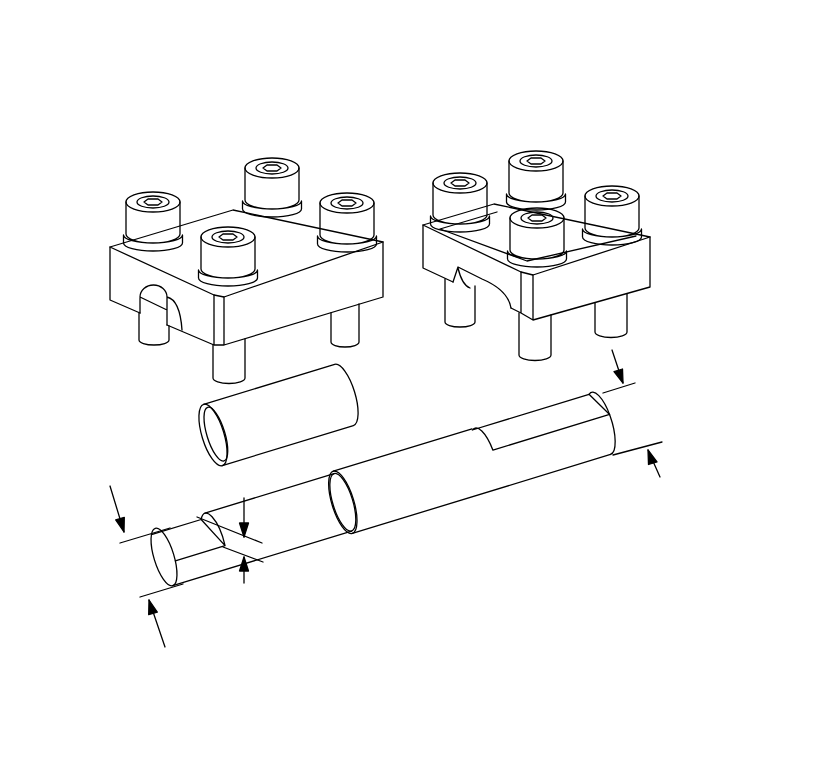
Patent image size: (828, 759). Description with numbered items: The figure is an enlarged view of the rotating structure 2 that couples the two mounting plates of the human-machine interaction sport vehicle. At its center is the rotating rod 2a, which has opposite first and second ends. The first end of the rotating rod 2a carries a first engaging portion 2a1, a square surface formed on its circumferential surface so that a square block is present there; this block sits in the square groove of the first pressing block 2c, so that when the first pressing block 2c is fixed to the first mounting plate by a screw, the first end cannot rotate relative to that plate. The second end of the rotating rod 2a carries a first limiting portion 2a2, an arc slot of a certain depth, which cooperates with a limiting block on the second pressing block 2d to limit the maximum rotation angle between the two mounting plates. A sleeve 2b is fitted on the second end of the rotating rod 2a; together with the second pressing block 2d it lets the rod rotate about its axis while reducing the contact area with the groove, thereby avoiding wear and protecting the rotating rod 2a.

The rotating structure 2 is at (373, 70).
The second pressing block 2d is at (233, 212).
The first pressing block 2c is at (623, 203).
The sleeve 2b is at (258, 413).
The rotating rod 2a is at (393, 524).
The first engaging portion 2a1 is at (541, 421).
The first limiting portion 2a2 is at (187, 537).